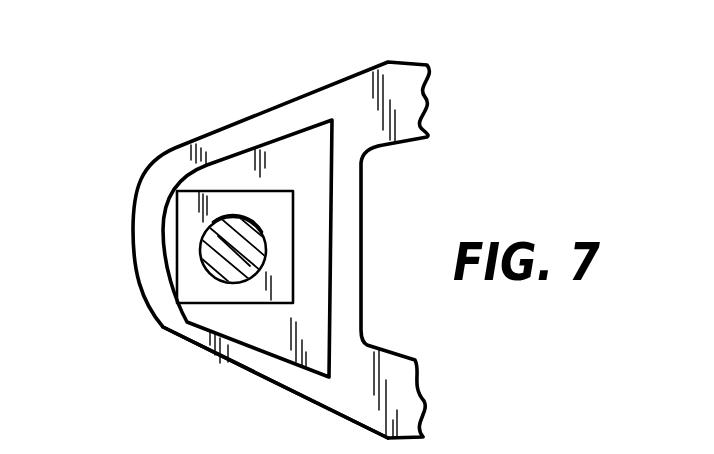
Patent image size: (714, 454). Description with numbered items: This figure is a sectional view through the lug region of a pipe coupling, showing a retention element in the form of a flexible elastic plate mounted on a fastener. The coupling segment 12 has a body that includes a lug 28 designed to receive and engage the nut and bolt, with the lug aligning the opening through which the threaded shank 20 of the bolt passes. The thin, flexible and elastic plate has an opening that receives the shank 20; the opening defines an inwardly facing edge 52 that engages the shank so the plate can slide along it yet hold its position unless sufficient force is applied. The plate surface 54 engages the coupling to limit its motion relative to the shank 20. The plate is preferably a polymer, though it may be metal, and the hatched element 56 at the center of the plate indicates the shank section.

The coupling segment 12 is at (408, 72).
The threaded shank 20 is at (230, 265).
The lug 28 is at (258, 370).
The inwardly facing edge 52 is at (185, 243).
The plate surface 54 is at (215, 263).
The bearing opening 56 is at (213, 222).